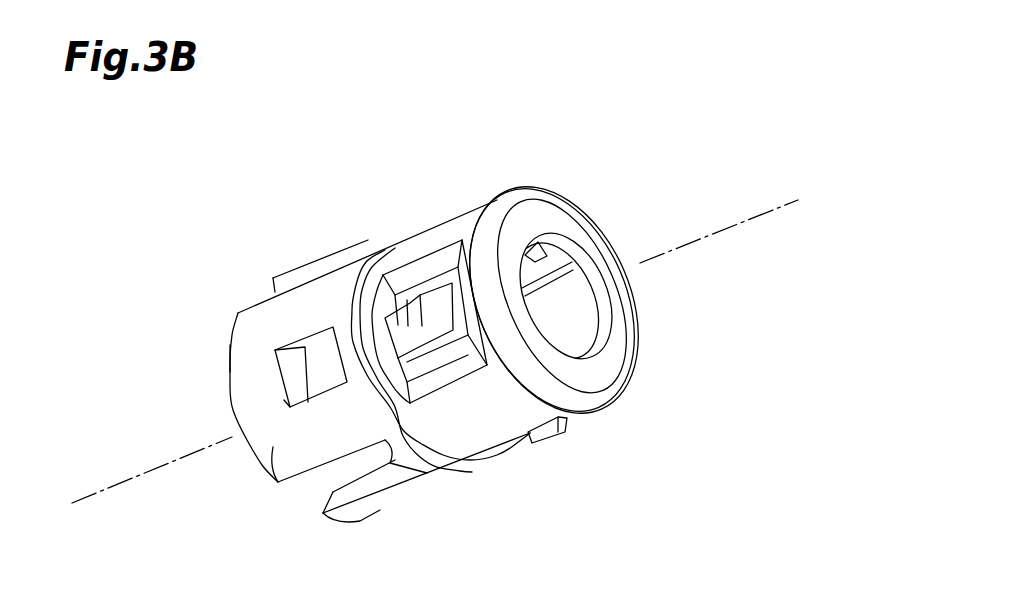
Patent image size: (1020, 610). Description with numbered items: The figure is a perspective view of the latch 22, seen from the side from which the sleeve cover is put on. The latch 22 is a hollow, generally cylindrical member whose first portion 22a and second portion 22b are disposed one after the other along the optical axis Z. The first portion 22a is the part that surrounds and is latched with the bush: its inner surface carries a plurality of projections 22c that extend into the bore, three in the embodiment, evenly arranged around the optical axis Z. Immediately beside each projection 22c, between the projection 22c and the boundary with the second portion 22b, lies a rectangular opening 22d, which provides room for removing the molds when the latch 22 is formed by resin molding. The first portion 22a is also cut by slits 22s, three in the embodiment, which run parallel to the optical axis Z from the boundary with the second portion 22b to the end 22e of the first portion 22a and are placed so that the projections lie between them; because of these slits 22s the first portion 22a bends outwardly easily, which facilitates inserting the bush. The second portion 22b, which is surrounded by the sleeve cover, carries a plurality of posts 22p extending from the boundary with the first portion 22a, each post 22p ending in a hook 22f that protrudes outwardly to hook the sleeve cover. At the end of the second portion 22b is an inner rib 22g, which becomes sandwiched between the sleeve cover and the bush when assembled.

The latch 22 is at (598, 104).
The first portion 22a is at (274, 450).
The second portion 22b is at (460, 222).
The projection 22c is at (293, 388).
The rectangular opening 22d is at (320, 365).
The end of the first portion 22e is at (231, 403).
The hook 22f is at (432, 312).
The inner rib 22g is at (600, 320).
The post 22p is at (383, 275).
The slit 22s is at (263, 292).
The optical axis Z is at (767, 211).